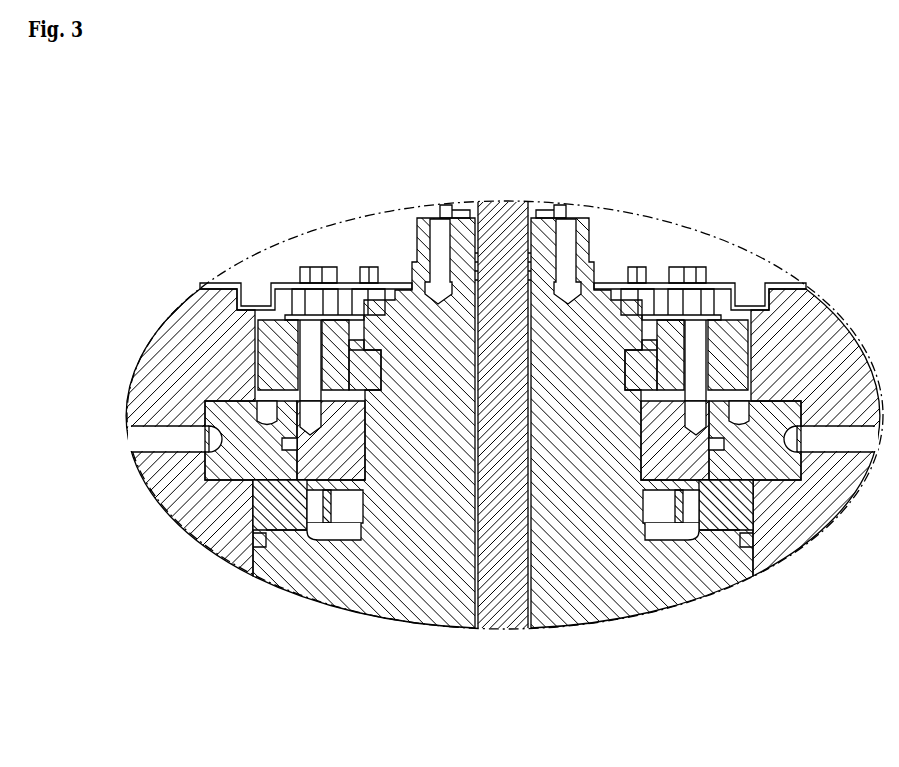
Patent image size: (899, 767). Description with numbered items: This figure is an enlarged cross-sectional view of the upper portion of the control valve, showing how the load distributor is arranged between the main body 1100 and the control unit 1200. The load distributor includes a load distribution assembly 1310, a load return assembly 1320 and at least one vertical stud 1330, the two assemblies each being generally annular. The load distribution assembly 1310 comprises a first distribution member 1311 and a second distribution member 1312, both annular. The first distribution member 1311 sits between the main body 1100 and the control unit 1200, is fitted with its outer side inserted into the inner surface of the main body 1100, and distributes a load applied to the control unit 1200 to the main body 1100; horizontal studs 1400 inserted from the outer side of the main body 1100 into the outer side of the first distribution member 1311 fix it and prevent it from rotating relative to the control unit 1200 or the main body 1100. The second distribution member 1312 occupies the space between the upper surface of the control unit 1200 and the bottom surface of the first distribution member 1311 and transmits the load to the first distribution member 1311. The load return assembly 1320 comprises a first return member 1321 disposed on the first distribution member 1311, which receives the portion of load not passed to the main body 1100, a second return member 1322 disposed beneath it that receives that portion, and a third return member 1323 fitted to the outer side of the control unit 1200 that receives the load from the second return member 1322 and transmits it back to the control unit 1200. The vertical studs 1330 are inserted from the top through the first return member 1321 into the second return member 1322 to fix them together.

The main body 1100 is at (197, 513).
The control unit 1200 is at (405, 595).
The load distribution assembly 1310 is at (449, 463).
The first distribution member 1311 is at (782, 467).
The second distribution member 1312 is at (730, 523).
The load return assembly 1320 is at (449, 367).
The first return member 1321 is at (752, 283).
The second return member 1322 is at (703, 430).
The third return member 1323 is at (767, 150).
The vertical stud 1330 is at (312, 345).
The horizontal stud 1400 is at (157, 433).